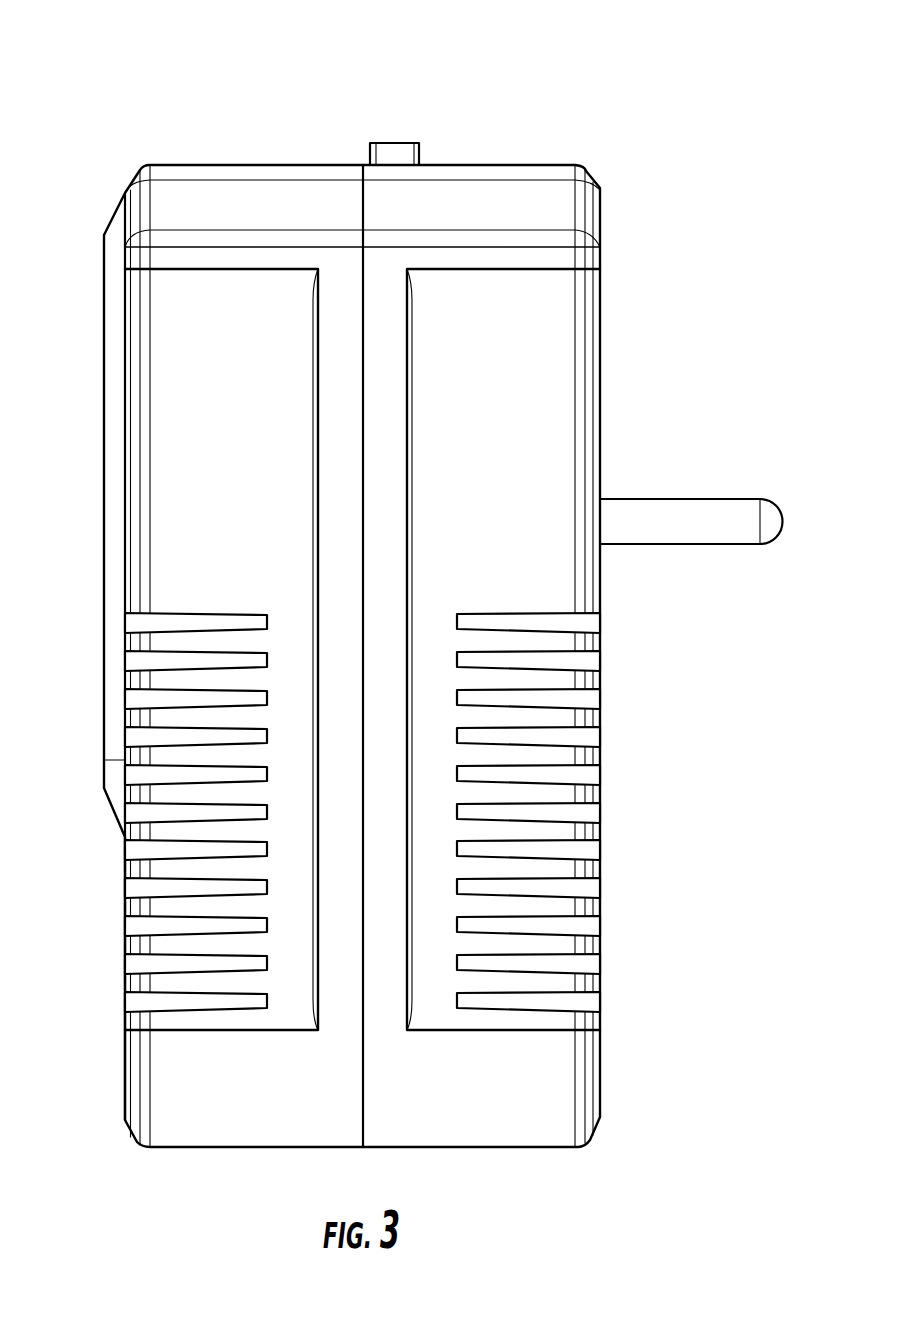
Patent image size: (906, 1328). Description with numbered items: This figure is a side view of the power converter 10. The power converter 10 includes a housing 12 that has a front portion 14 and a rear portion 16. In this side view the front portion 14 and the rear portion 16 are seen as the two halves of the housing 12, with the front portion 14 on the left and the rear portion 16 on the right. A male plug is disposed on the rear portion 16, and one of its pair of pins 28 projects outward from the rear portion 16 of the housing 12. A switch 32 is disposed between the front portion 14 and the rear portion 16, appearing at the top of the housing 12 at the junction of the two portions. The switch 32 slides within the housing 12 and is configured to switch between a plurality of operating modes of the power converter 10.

The power converter 10 is at (412, 573).
The housing 12 is at (544, 164).
The front portion 14 is at (125, 943).
The rear portion 16 is at (601, 790).
The pin 28 is at (728, 505).
The switch 32 is at (392, 142).